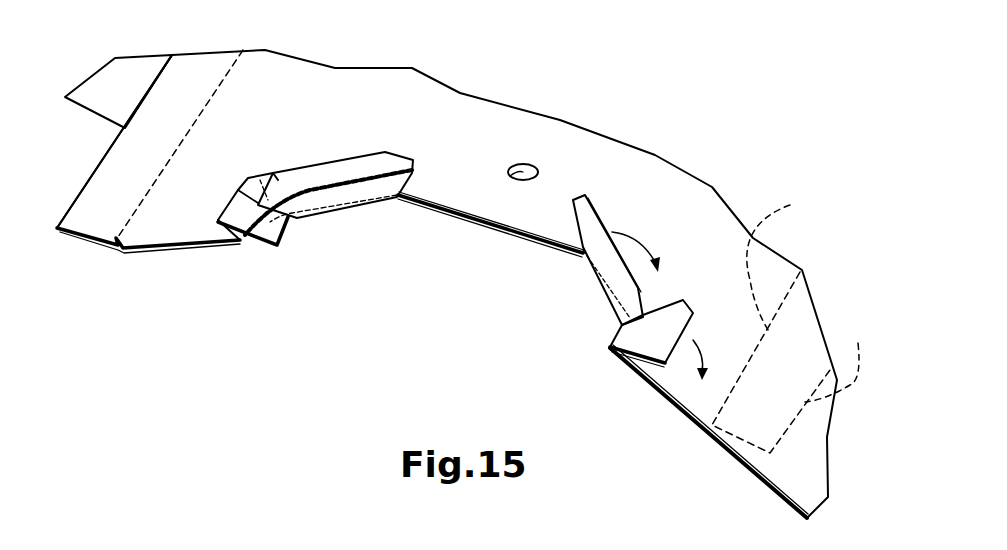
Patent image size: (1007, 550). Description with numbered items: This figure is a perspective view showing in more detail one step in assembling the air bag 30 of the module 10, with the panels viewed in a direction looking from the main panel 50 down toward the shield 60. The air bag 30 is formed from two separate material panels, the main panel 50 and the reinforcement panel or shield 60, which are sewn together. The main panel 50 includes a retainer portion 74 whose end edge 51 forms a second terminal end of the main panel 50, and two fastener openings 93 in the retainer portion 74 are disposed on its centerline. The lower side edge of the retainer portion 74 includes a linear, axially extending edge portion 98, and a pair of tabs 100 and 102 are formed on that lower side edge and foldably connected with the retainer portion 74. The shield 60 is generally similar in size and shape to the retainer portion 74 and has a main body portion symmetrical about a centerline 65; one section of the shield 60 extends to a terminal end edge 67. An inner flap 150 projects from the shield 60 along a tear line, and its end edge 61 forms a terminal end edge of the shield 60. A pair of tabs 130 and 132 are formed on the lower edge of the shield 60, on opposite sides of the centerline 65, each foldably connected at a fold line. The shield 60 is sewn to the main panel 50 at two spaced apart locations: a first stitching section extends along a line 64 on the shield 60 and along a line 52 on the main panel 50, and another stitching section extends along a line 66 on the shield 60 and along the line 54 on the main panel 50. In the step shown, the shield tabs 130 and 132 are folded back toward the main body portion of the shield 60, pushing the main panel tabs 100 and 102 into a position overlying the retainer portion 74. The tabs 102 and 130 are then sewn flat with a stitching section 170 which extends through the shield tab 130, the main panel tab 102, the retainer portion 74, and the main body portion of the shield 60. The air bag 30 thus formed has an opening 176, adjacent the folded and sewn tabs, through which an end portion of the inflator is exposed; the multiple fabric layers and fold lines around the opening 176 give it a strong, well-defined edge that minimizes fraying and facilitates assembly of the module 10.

The module 10 is at (728, 117).
The air bag 30 is at (636, 102).
The main panel 50 is at (770, 500).
The end edge 51 is at (97, 160).
The line 52 is at (222, 80).
The line 54 is at (805, 200).
The shield 60 is at (680, 435).
The end edge 61 is at (82, 182).
The line 64 is at (118, 256).
The centerline 65 is at (522, 172).
The line 66 is at (710, 440).
The terminal end edge 67 is at (837, 357).
The retainer portion 74 is at (580, 160).
The fastener openings 93 is at (520, 176).
The edge portion 98 is at (450, 213).
The tab 100 is at (648, 343).
The tab 102 is at (242, 222).
The tab 130 is at (337, 178).
The tab 132 is at (617, 268).
The inner flap 150 is at (105, 92).
The stitching section 170 is at (316, 196).
The opening 176 is at (478, 255).